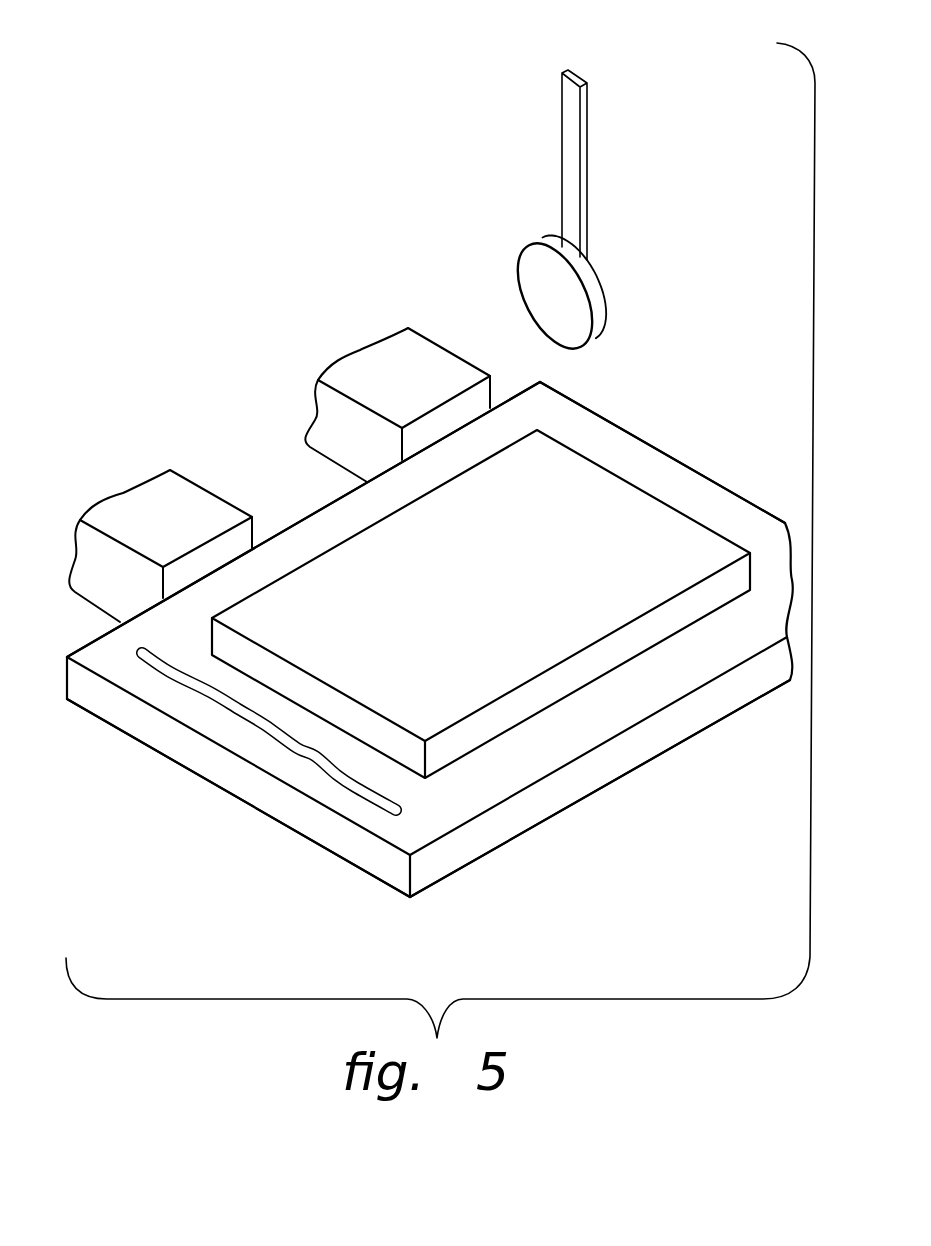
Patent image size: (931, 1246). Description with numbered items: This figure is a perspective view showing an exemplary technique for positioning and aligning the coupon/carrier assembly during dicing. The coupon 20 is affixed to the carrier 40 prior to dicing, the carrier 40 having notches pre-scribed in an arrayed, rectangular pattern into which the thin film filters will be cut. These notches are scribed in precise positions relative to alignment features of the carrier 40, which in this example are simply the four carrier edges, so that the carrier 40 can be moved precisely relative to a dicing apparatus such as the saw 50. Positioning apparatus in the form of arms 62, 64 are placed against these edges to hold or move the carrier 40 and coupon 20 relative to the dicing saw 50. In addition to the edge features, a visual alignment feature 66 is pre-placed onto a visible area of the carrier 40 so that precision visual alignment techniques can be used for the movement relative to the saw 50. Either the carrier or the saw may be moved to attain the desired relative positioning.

The coupon 20 is at (500, 596).
The carrier 40 is at (555, 815).
The dicing saw 50 is at (603, 298).
The arm 62 is at (187, 531).
The arm 64 is at (419, 391).
The visual alignment feature 66 is at (350, 786).